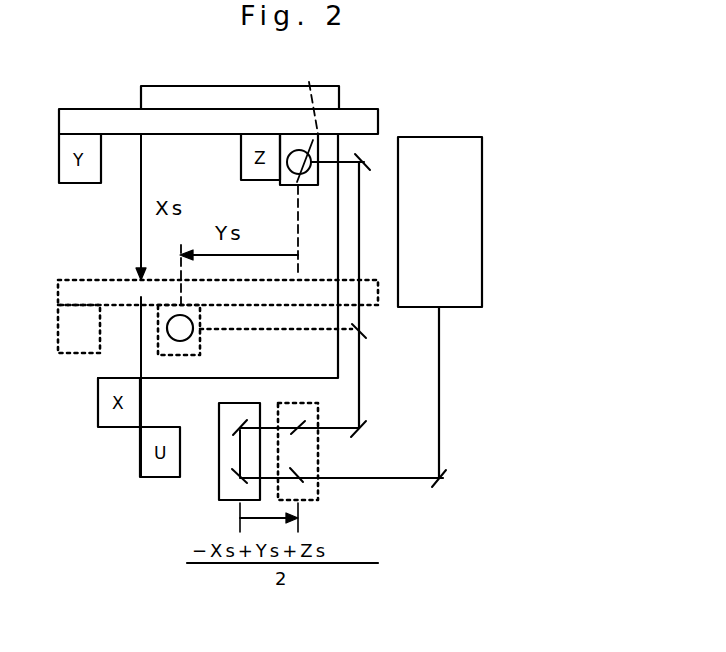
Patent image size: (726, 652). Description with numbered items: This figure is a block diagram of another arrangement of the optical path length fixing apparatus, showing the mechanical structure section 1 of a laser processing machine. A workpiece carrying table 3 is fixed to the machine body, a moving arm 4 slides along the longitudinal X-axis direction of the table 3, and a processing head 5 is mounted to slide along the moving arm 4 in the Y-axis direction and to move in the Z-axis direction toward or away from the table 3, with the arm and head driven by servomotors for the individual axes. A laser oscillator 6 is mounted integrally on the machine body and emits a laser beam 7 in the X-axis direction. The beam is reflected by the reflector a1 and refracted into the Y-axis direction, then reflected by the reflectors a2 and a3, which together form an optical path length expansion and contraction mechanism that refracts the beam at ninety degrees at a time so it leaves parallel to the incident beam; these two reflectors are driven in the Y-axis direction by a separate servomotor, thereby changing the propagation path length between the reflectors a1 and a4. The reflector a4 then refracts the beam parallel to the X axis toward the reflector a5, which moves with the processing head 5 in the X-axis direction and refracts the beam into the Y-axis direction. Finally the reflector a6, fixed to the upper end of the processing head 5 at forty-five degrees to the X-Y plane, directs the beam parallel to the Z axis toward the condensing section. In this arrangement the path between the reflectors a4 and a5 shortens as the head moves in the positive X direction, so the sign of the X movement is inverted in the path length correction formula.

The mechanical structure section 1 is at (547, 102).
The workpiece carrying table 3 is at (141, 94).
The moving arm 4 is at (378, 110).
The processing head 5 is at (293, 173).
The laser oscillator 6 is at (482, 181).
The laser beam 7 is at (440, 396).
The reflector a1 is at (442, 482).
The reflector a2 is at (298, 484).
The reflector a3 is at (300, 425).
The reflector a4 is at (362, 432).
The reflector a5 is at (372, 160).
The reflector a6 is at (309, 82).